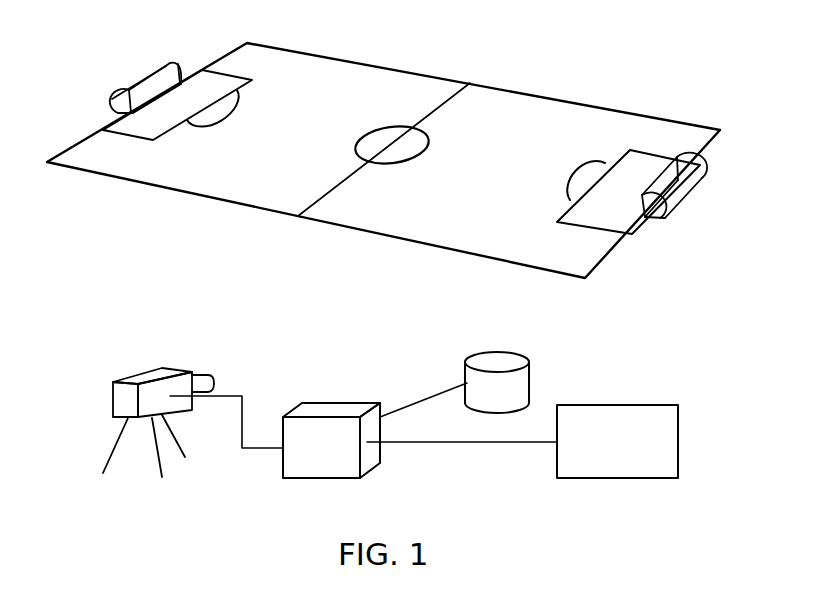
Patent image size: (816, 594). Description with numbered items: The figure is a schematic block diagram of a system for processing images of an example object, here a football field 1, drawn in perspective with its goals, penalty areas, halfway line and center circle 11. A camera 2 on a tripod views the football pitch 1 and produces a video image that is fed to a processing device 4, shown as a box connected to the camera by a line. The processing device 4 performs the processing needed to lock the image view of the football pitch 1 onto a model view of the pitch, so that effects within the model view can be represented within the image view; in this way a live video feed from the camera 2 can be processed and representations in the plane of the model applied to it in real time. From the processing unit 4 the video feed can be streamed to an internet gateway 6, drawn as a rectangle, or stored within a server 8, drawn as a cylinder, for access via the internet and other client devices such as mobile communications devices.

The football field 1 is at (486, 71).
The center circle of the field 11 is at (430, 142).
The camera 2 is at (165, 368).
The processing device 4 is at (337, 402).
The server 8 is at (532, 373).
The internet gateway 6 is at (680, 447).